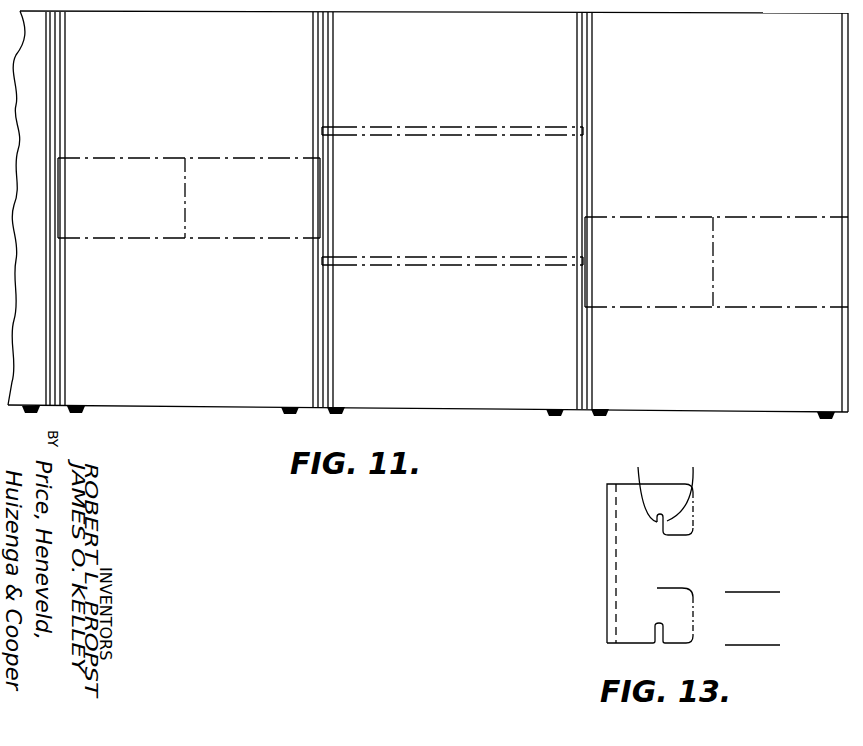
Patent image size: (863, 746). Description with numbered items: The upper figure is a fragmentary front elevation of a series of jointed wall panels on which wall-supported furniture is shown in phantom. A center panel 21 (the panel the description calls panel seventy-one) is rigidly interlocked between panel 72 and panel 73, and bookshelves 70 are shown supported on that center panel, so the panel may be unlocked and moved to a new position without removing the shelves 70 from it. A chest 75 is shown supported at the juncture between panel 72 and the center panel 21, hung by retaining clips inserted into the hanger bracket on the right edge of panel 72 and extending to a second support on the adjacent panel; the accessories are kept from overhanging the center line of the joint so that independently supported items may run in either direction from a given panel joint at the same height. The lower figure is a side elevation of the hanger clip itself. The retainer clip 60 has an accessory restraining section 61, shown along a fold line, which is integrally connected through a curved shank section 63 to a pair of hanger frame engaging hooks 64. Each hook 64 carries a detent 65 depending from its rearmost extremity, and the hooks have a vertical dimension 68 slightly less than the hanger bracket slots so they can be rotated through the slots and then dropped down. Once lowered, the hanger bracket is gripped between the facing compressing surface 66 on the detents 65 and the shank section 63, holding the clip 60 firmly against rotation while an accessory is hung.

In FIG. 11, the center cabinet section 21 is at (367, 209).
In FIG. 11, the panel 72 is at (187, 75).
In FIG. 11, the panel 73 is at (720, 97).
In FIG. 11, the chest 75 is at (240, 203).
In FIG. 11, the bookshelves 70 is at (434, 129).
In FIG. 13, the retainer clip 60 is at (657, 561).
In FIG. 13, the accessory restraining section 61 is at (623, 573).
In FIG. 13, the curved shank section 63 is at (643, 548).
In FIG. 13, the hanger frame engaging hooks 64 is at (699, 492).
In FIG. 13, the detent 65 is at (693, 534).
In FIG. 13, the compressing surface 66 is at (669, 484).
In FIG. 13, the vertical dimension 68 is at (745, 593).